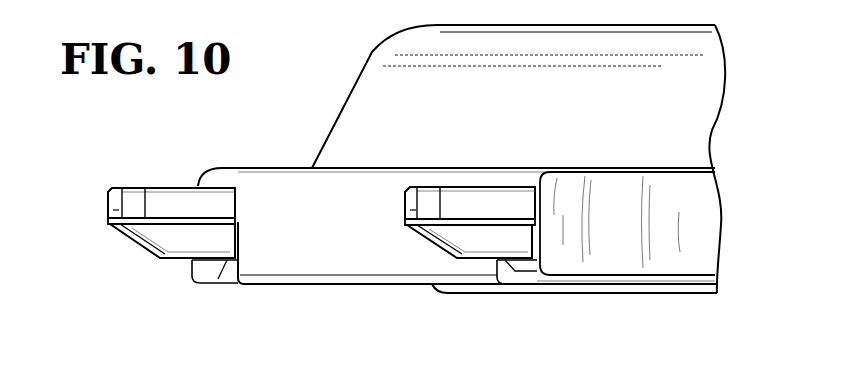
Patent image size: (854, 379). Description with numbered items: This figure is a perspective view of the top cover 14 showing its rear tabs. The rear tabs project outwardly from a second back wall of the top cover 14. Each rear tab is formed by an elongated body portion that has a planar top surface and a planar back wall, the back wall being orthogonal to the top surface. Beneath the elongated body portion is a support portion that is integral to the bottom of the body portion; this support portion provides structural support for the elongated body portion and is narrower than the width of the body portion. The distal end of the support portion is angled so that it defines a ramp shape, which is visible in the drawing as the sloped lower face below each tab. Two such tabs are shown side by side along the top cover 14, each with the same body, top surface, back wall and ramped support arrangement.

The top cover 14 is at (648, 137).